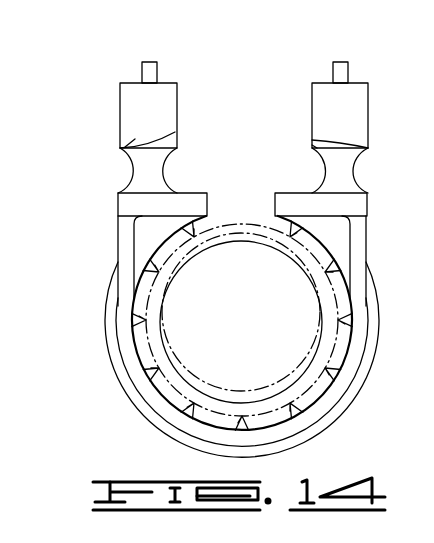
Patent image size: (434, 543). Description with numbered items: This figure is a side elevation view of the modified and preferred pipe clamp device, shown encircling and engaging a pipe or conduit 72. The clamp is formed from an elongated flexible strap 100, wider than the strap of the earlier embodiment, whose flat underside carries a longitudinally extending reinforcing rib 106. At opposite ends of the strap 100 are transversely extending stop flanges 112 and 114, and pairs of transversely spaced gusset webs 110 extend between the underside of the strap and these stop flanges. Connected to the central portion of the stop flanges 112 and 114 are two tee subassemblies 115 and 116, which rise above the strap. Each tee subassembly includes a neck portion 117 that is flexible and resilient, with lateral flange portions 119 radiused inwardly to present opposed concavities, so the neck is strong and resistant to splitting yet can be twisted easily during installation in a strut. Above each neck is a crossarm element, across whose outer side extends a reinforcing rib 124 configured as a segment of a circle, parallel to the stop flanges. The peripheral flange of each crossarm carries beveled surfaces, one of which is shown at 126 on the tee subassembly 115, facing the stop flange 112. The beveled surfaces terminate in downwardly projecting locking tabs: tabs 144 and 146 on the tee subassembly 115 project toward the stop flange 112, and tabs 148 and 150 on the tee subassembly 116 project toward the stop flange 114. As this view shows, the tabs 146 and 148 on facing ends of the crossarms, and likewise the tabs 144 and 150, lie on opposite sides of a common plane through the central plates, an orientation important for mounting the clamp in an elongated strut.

The pipe or conduit 72 is at (207, 360).
The elongated flexible strap 100 is at (226, 322).
The reinforcing rib 106 is at (372, 320).
The gusset webs 110 is at (342, 240).
The stop flange 112 is at (195, 206).
The stop flange 114 is at (356, 206).
The tee subassembly 115 is at (226, 106).
The tee subassembly 116 is at (308, 72).
The neck portion 117 is at (329, 114).
The lateral flange portions 119 is at (150, 175).
The reinforcing rib 124 is at (150, 68).
The beveled surface 126 is at (168, 97).
The locking tab 144 is at (177, 141).
The locking tab 146 is at (122, 148).
The locking tab 148 is at (312, 121).
The locking tab 150 is at (312, 147).